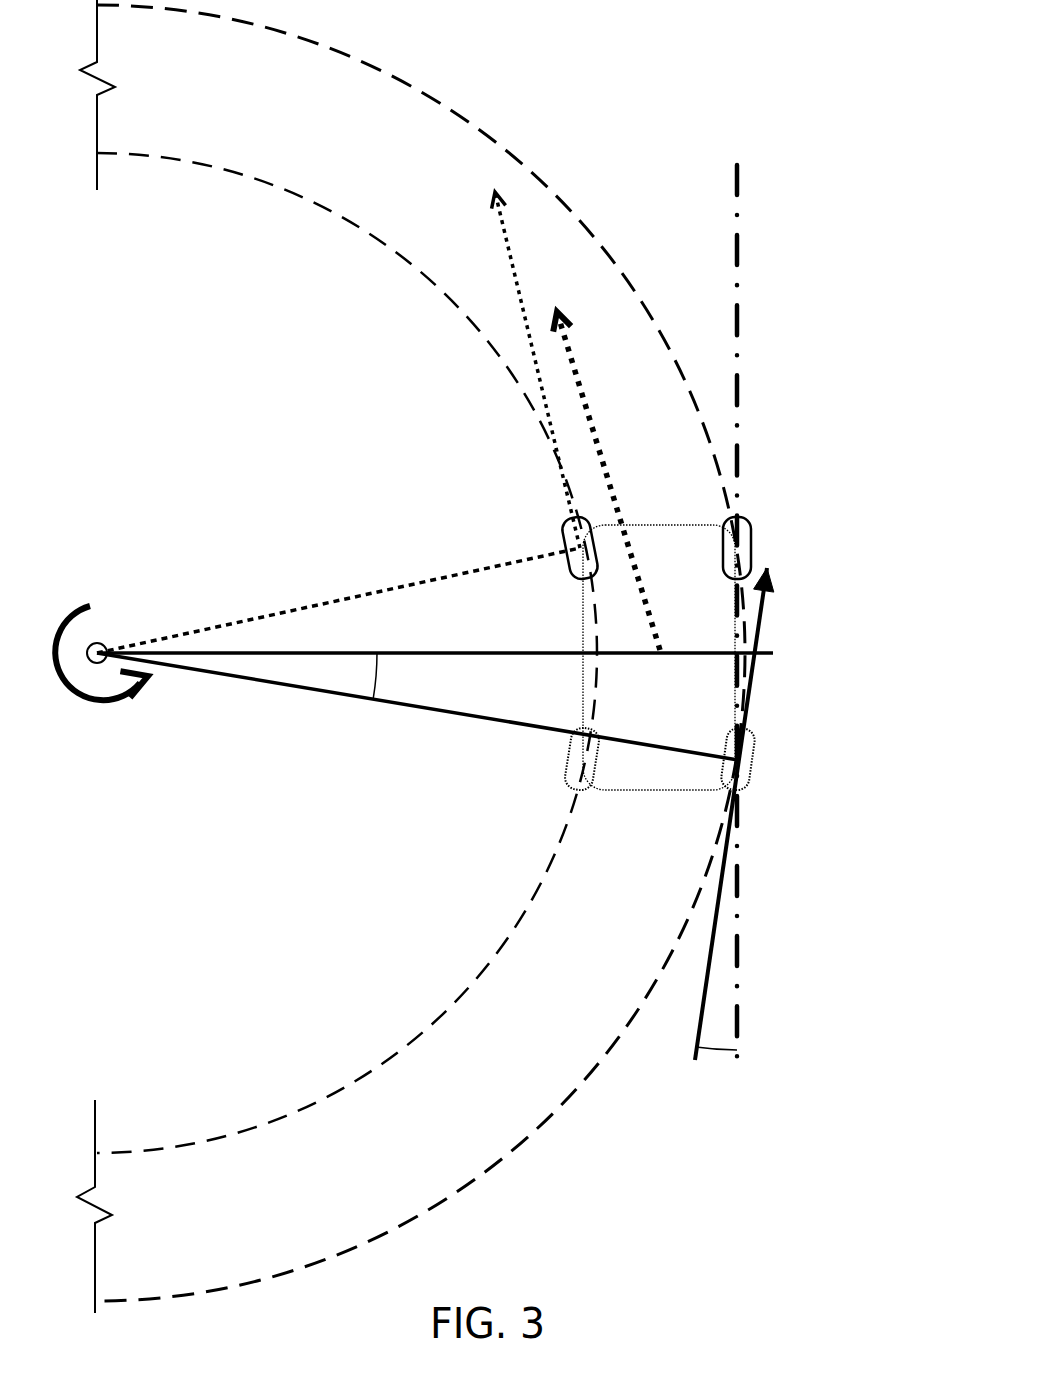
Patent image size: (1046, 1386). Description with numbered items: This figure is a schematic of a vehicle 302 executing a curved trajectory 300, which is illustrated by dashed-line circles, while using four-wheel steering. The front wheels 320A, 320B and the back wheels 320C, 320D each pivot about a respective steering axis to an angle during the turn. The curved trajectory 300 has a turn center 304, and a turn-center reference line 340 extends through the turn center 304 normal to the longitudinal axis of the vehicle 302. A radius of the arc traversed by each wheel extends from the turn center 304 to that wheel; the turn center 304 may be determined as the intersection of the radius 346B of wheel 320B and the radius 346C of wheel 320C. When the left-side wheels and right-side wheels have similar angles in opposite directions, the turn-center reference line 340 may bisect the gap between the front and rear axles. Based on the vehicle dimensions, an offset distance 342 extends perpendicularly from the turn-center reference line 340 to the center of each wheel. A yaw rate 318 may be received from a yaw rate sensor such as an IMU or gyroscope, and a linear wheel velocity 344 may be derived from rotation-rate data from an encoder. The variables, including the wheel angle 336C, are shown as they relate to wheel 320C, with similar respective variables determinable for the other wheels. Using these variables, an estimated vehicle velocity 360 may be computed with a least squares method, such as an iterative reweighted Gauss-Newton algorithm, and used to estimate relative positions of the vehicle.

The curved trajectory 300 is at (222, 13).
The vehicle 302 is at (643, 797).
The turn center 304 is at (100, 650).
The yaw rate 318 is at (82, 696).
The front wheel 320A is at (752, 550).
The front wheel 320B is at (570, 547).
The back wheel 320C is at (755, 765).
The back wheel 320D is at (562, 765).
The wheel angle 336C is at (713, 1055).
The turn-center reference line 340 is at (315, 653).
The offset distance 342 is at (733, 675).
The linear wheel velocity 344 is at (760, 620).
The radius 346B is at (423, 575).
The radius 346C is at (430, 712).
The estimated vehicle velocity 360 is at (567, 352).